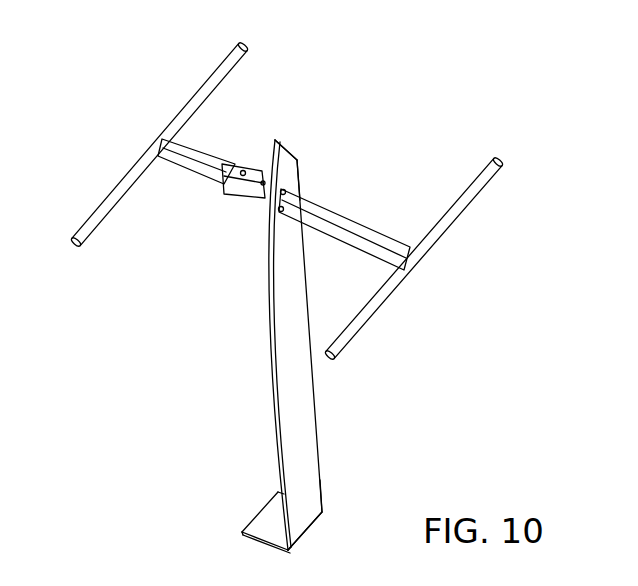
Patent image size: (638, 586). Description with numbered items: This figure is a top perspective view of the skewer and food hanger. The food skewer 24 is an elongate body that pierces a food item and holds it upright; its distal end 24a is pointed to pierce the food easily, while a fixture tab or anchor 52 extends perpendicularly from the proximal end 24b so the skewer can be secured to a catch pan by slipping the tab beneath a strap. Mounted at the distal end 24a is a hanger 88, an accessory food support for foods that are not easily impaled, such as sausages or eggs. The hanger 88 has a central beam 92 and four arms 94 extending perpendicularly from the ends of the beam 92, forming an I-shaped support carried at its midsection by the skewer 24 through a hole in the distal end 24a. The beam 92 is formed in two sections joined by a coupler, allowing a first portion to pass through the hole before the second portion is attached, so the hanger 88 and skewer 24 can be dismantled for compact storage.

The food skewer 24 is at (272, 332).
The distal end of the skewer 24a is at (310, 118).
The proximal end of the skewer 24b is at (345, 494).
The fixture tab 52 is at (255, 517).
The hanger 88 is at (526, 166).
The central beam 92 is at (328, 218).
The arms 94 is at (240, 53).